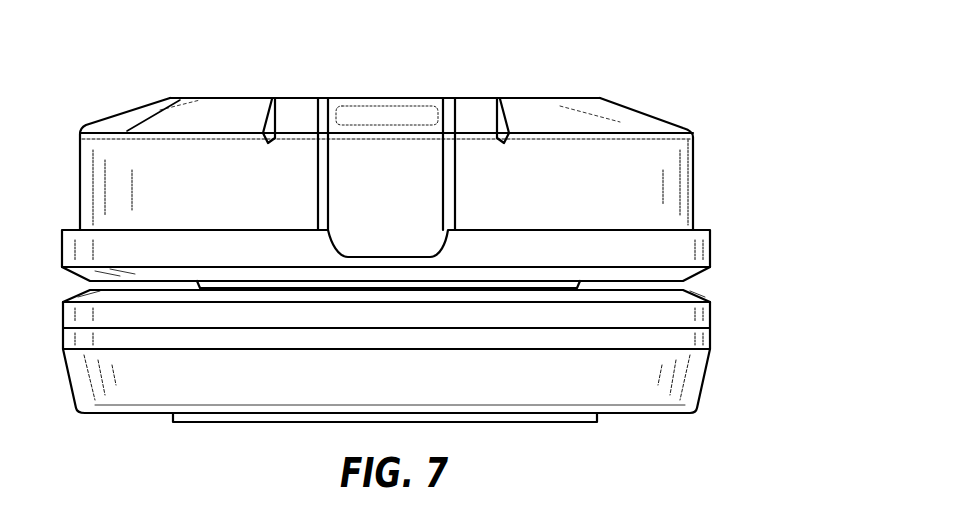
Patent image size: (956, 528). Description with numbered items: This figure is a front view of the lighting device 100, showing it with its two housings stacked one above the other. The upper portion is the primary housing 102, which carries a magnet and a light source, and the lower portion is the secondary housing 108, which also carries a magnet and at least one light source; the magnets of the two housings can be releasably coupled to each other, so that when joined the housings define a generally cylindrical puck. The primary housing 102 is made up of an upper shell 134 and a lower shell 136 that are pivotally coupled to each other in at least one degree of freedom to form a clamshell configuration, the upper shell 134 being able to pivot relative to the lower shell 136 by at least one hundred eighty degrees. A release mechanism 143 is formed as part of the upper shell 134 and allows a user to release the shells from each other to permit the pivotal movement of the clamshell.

The lighting device 100 is at (130, 68).
The primary housing 102 is at (728, 199).
The secondary housing 108 is at (657, 373).
The upper shell 134 is at (665, 173).
The lower shell 136 is at (700, 260).
The release mechanism 143 is at (380, 157).